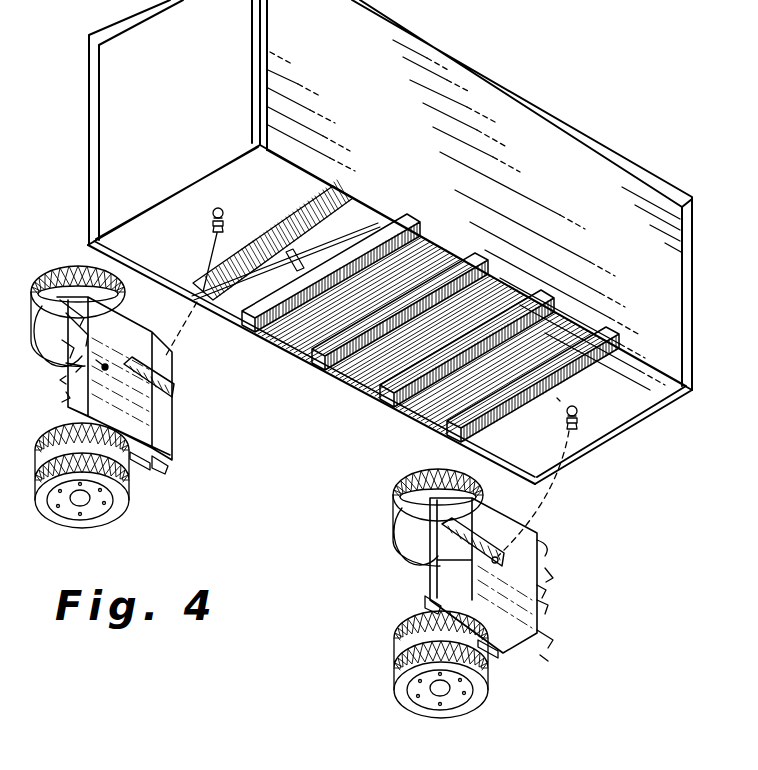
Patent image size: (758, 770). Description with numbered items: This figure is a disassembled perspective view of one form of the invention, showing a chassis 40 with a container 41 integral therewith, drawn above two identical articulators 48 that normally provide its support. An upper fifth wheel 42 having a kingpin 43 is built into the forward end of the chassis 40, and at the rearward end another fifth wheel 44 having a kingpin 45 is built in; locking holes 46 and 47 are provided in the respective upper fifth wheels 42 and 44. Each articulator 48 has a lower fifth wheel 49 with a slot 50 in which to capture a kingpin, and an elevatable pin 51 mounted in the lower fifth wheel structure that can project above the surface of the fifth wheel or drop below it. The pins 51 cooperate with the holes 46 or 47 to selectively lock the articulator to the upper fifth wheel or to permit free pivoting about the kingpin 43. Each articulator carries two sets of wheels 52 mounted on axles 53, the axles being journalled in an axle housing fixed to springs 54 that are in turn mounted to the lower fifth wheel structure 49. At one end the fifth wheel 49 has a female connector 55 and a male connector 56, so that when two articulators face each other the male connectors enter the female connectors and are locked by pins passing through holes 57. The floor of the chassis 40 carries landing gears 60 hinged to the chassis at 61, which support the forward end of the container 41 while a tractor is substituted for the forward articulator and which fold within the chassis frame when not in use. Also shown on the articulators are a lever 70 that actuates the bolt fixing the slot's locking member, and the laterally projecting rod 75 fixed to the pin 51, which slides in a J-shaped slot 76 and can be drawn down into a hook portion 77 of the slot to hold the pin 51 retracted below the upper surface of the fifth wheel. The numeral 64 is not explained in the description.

The chassis 40 is at (464, 234).
The container 41 is at (428, 150).
The upper fifth wheel 42 is at (268, 232).
The kingpin 43 is at (210, 230).
The fifth wheel 44 is at (569, 404).
The kingpin 45 is at (578, 411).
The locking hole 46 is at (197, 200).
The locking hole 47 is at (579, 425).
The articulator 48 is at (306, 502).
The lower fifth wheel 49 is at (135, 330).
The slot 50 is at (174, 388).
The elevatable pin 51 is at (107, 366).
The wheels 52 is at (129, 508).
The axle 53 is at (82, 502).
The spring 54 is at (140, 470).
The female connector 55 is at (64, 382).
The male connector 56 is at (86, 316).
The holes 57 is at (65, 401).
The landing gear 60 is at (371, 232).
The hinge 61 is at (395, 219).
The bracket 64 is at (165, 468).
The lever 70 is at (86, 332).
The laterally projecting rod 75 is at (68, 351).
The J-shaped slot 76 is at (66, 368).
The hook portion 77 is at (98, 368).